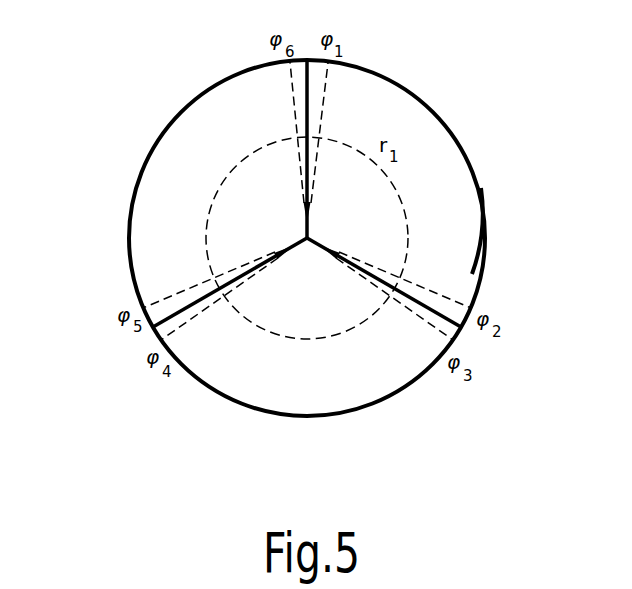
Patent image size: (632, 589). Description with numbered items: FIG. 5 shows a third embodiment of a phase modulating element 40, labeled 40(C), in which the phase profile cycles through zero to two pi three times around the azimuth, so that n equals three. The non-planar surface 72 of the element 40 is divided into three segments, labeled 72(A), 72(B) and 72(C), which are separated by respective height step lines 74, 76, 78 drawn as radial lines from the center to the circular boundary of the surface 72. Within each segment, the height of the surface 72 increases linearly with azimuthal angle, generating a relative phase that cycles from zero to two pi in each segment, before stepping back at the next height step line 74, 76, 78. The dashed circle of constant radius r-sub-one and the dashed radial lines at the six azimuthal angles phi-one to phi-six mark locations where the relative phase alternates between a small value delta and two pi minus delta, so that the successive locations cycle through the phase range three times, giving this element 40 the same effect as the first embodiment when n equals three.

The non-planar surface 72 is at (443, 145).
The phase modulating element 40 is at (482, 197).
The height step line 74 is at (312, 100).
The height step line 76 is at (442, 305).
The third radial direction vector 78 is at (185, 300).